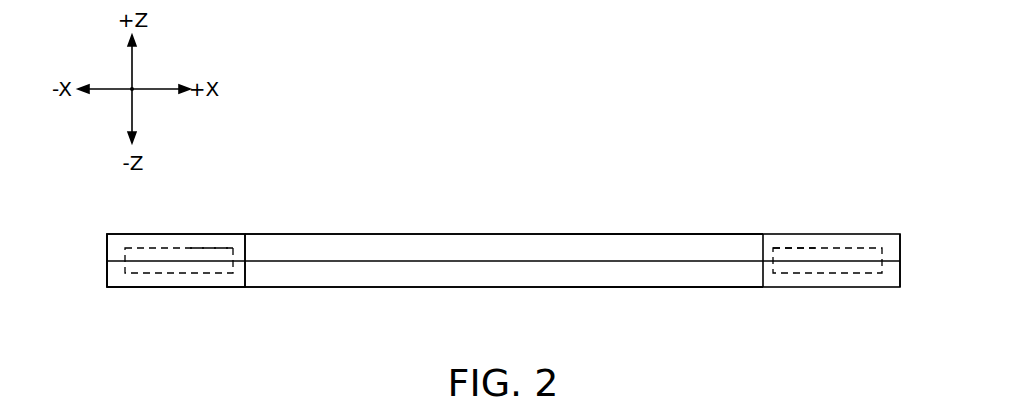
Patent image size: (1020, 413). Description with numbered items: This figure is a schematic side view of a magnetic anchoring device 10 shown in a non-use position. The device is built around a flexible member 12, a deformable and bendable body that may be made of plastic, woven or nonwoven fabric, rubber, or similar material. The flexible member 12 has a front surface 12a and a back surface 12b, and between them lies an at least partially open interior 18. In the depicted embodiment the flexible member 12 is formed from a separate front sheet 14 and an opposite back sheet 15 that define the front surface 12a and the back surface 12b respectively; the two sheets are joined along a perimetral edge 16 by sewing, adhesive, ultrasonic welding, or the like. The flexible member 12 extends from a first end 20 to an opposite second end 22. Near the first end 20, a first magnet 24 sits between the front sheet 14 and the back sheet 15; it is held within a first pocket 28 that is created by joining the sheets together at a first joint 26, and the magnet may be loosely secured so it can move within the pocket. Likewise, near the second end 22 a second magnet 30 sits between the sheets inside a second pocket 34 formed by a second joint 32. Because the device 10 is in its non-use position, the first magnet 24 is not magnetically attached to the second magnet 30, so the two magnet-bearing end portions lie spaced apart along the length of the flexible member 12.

The magnetic anchoring device 10 is at (712, 203).
The flexible member 12 is at (503, 231).
The front surface 12a is at (652, 234).
The back surface 12b is at (653, 288).
The front sheet 14 is at (128, 237).
The back sheet 15 is at (128, 286).
The perimetral edge 16 is at (587, 262).
The open interior 18 is at (373, 278).
The first end 20 is at (107, 257).
The second end 22 is at (900, 257).
The first magnet 24 is at (178, 248).
The first joint 26 is at (247, 284).
The first pocket 28 is at (218, 248).
The second magnet 30 is at (827, 248).
The second joint 32 is at (759, 287).
The second pocket 34 is at (790, 248).